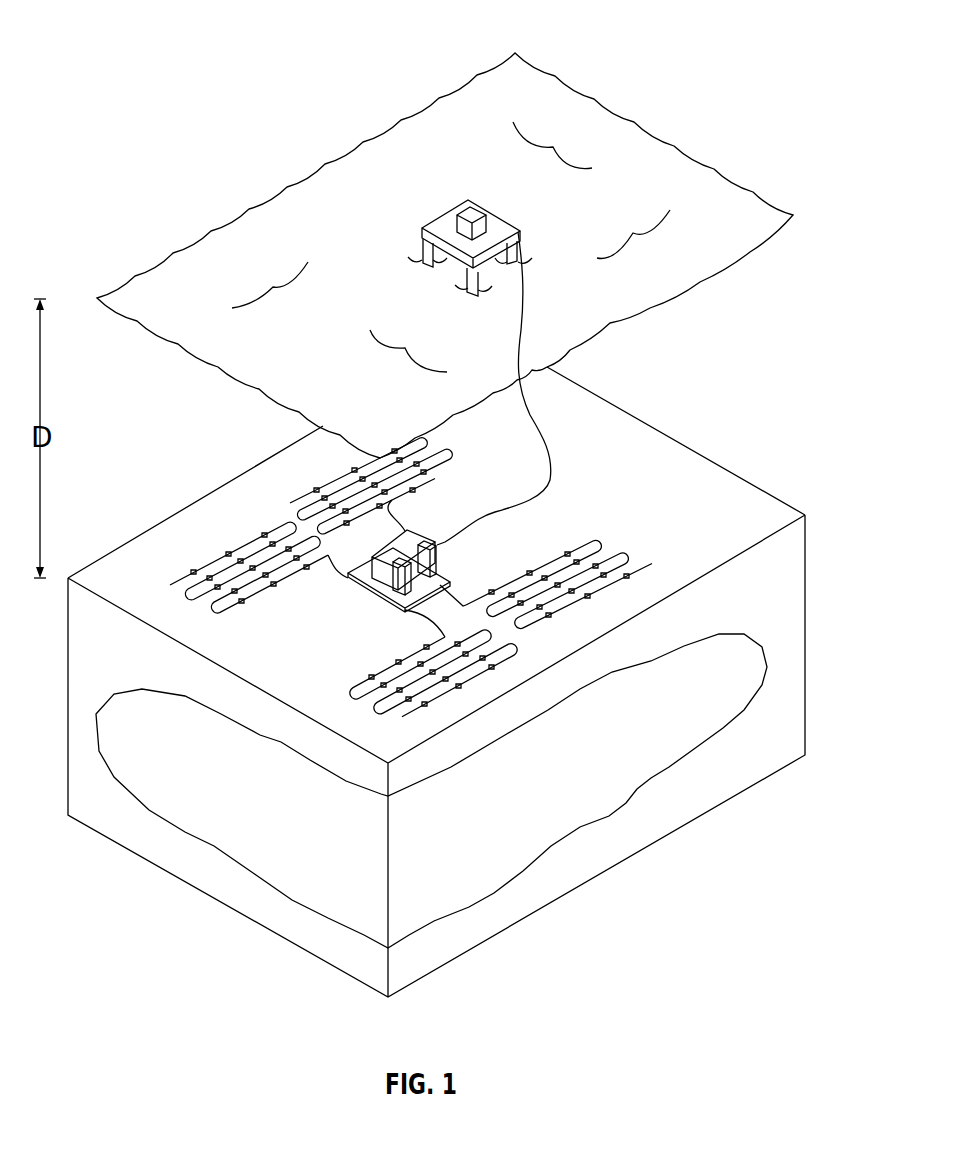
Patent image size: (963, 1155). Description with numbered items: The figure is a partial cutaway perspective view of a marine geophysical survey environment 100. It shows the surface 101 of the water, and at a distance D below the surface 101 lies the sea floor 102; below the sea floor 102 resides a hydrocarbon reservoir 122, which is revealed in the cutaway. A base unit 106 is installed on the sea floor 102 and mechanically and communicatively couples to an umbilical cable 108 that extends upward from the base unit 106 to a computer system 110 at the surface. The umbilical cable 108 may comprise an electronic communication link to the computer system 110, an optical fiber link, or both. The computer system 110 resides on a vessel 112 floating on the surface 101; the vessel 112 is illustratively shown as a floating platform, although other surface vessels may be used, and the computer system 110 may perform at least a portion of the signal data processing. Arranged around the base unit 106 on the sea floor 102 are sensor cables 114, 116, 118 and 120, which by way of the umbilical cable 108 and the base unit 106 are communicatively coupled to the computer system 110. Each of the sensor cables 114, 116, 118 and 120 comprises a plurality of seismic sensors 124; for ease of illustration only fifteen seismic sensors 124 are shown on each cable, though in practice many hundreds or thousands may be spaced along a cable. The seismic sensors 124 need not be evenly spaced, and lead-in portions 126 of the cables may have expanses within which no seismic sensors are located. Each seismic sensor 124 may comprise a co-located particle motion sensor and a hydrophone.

The marine geophysical survey environment 100 is at (178, 88).
The surface of the water 101 is at (333, 361).
The sea floor 102 is at (110, 566).
The base unit 106 is at (358, 590).
The umbilical cable 108 is at (556, 452).
The computer system 110 is at (478, 208).
The vessel 112 is at (438, 227).
The sensor cable 114 is at (210, 560).
The sensor cable 116 is at (297, 497).
The sensor cable 118 is at (274, 742).
The sensor cable 120 is at (598, 546).
The hydrocarbon reservoir 122 is at (569, 800).
The seismic sensors 124 is at (437, 477).
The lead-in portions 126 is at (401, 522).